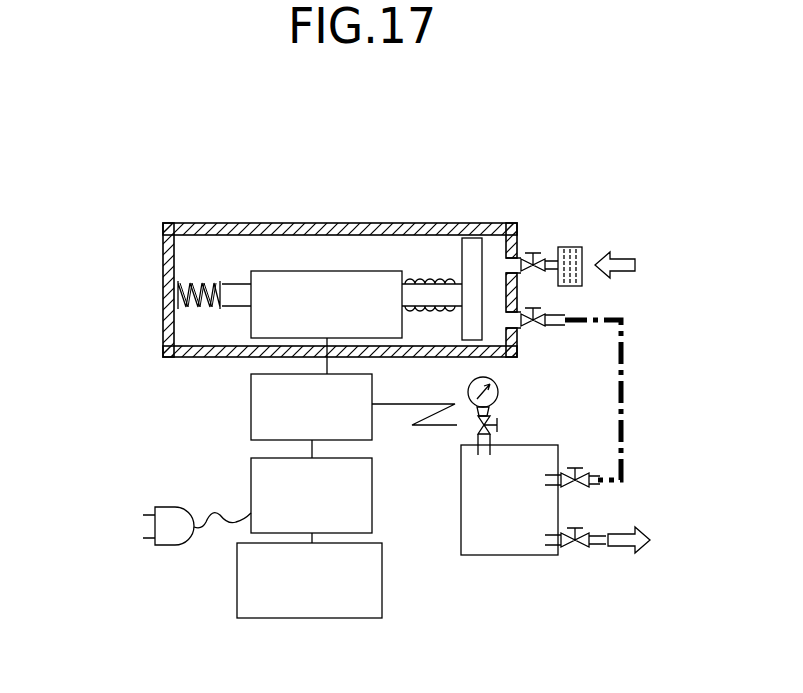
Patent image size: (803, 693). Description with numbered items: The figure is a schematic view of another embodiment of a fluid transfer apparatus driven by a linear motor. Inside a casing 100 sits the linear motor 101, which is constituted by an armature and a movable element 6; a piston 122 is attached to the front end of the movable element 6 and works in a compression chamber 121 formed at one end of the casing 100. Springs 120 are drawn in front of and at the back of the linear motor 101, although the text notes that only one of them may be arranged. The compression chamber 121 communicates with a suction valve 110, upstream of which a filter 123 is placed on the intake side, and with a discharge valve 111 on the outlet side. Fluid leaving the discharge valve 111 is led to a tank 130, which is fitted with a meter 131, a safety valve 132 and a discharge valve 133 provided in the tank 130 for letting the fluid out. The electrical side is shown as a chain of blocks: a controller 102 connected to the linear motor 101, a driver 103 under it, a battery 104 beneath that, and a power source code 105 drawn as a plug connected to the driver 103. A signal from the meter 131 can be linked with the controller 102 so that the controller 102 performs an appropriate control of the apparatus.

The casing 100 is at (163, 244).
The compression chamber 121 is at (500, 250).
The spring 120 is at (190, 308).
The movable element 6 is at (233, 295).
The linear motor 101 is at (365, 330).
The piston 122 is at (467, 262).
The suction valve 110 is at (538, 250).
The filter 123 is at (578, 248).
The discharge valve 111 is at (548, 312).
The controller 102 is at (251, 410).
The driver 103 is at (251, 468).
The battery 104 is at (237, 590).
The power source code 105 is at (163, 507).
The meter 131 is at (498, 387).
The safety valve 132 is at (500, 420).
The tank 130 is at (500, 556).
The discharge valve 133 is at (575, 548).